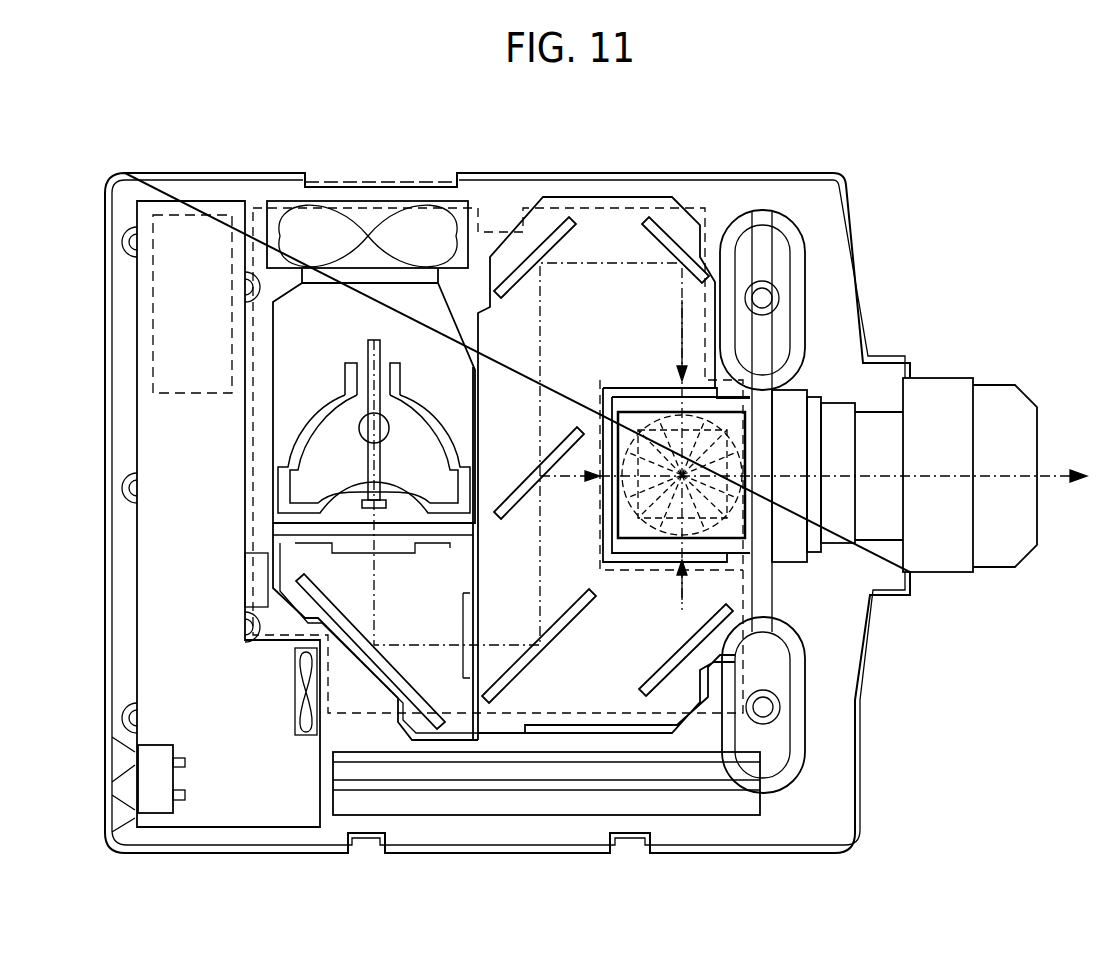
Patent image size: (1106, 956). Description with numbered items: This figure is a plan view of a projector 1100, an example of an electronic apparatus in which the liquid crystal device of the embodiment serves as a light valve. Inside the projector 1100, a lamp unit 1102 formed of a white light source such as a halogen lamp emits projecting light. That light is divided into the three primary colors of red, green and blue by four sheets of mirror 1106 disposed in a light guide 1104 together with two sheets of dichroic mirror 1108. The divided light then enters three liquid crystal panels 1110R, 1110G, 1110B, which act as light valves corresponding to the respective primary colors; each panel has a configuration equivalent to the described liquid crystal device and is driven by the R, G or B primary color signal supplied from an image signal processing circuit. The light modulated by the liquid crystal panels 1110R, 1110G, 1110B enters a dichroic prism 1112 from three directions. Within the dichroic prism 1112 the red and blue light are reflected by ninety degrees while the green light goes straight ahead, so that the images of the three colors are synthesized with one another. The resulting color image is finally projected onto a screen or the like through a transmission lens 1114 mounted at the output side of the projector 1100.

The projector 1100 is at (866, 178).
The lamp unit 1102 is at (422, 322).
The light guide 1104 is at (551, 195).
The mirror 1106 is at (652, 235).
The dichroic mirror 1108 is at (531, 487).
The liquid crystal panel 1110R is at (659, 346).
The liquid crystal panel 1110G is at (610, 443).
The liquid crystal panel 1110B is at (651, 553).
The dichroic prism 1112 is at (745, 540).
The transmission lens 1114 is at (1005, 392).